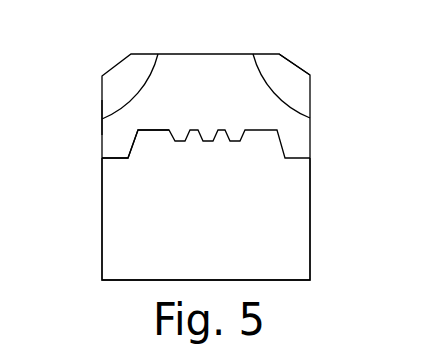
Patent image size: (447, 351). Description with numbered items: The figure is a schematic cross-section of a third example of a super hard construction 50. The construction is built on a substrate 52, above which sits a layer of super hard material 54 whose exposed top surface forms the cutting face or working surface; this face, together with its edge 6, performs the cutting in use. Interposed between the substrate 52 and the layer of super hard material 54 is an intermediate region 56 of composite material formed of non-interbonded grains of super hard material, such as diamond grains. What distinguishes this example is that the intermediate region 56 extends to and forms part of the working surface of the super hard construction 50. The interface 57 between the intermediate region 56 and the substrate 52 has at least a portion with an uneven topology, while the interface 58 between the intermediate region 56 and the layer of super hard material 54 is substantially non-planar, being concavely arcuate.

The super hard construction 50 is at (245, 42).
The substrate 52 is at (297, 193).
The layer of super hard material 54 is at (112, 93).
The intermediate region 56 is at (297, 143).
The interface 57 is at (153, 130).
The interface 58 is at (110, 113).
The edge 6 is at (310, 75).